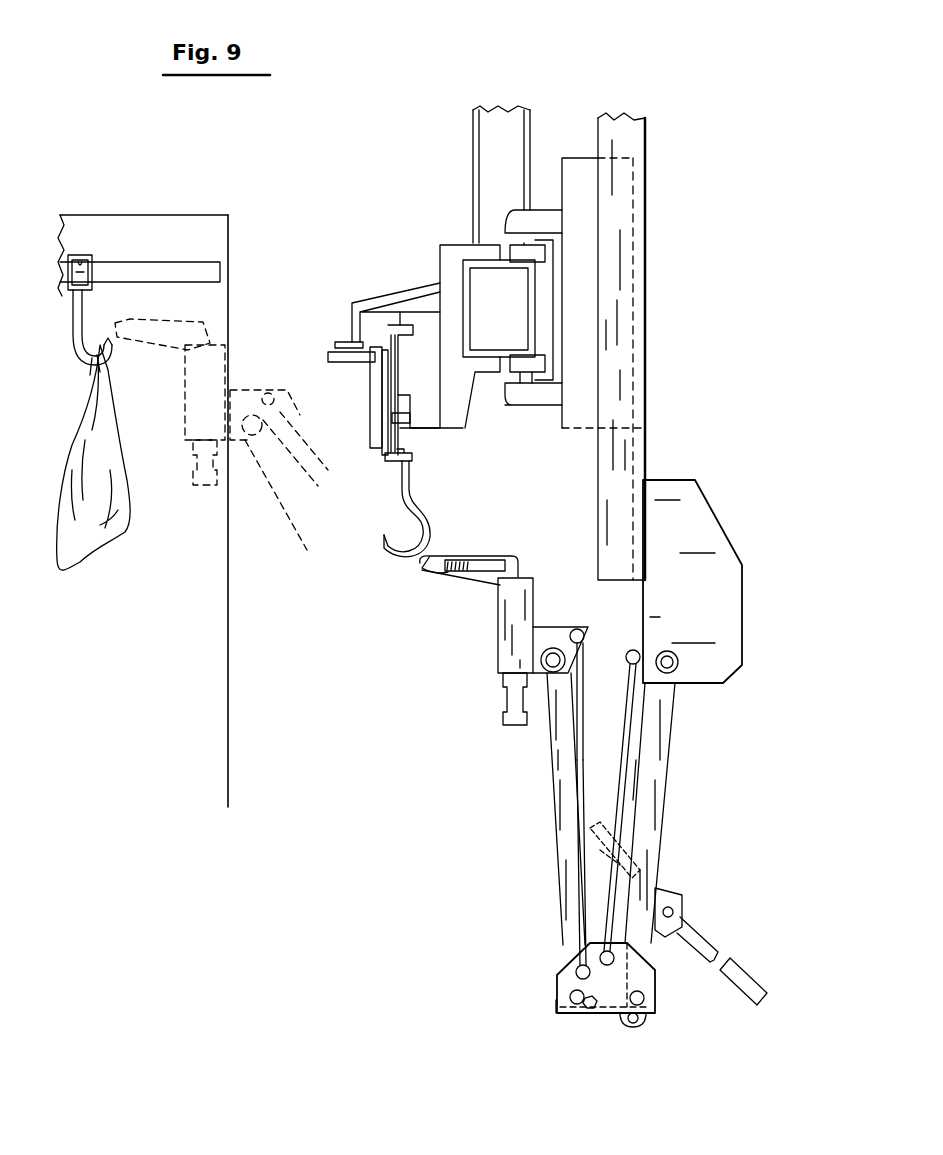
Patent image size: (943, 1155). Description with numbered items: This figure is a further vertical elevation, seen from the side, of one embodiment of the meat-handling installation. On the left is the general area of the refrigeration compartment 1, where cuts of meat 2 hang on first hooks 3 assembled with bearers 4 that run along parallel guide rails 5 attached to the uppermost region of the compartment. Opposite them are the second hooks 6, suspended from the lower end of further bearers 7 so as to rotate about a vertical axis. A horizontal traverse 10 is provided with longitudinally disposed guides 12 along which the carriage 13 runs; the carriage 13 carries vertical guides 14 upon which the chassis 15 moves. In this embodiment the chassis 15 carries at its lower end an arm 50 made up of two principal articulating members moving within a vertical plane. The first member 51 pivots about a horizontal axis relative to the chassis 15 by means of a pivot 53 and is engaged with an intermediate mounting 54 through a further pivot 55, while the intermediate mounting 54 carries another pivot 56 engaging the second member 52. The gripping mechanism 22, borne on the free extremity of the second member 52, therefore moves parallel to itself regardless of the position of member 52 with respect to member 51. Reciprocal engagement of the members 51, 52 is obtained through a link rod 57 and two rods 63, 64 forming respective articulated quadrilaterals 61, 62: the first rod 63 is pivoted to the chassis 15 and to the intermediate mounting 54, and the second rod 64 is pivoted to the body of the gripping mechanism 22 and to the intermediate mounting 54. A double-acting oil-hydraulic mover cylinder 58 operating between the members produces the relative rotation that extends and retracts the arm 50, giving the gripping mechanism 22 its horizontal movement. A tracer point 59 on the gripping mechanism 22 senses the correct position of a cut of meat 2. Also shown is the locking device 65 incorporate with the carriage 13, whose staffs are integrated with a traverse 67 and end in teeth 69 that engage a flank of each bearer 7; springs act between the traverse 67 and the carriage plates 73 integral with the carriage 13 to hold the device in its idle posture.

The refrigeration compartment 1 is at (243, 218).
The cuts of meat 2 is at (128, 515).
The first hooks 3 is at (75, 330).
The bearers 4 is at (58, 295).
The guide rails 5 is at (130, 272).
The second hooks 6 is at (425, 528).
The bearers 7 is at (380, 370).
The horizontal traverse 10 is at (452, 247).
The longitudinal guides 12 is at (503, 392).
The carriage 13 is at (549, 198).
The vertical guides 14 is at (633, 247).
The chassis 15 is at (680, 468).
The gripping mechanism 22 is at (475, 592).
The arm 50 is at (542, 1022).
The first member 51 is at (655, 845).
The second member 52 is at (560, 822).
The pivot 53 is at (680, 672).
The intermediate mounting 54 is at (586, 972).
The pivot 55 is at (644, 998).
The pivot 56 is at (572, 997).
The link rod 57 is at (607, 1012).
The double-acting oil-hydraulic mover cylinder 58 is at (735, 920).
The tracer point 59 is at (485, 550).
The articulated quadrilateral 61 is at (613, 752).
The articulated quadrilateral 62 is at (576, 770).
The first rod 63 is at (625, 775).
The second rod 64 is at (580, 680).
The locking device 65 is at (368, 462).
The traverse 67 is at (375, 372).
The teeth 69 is at (392, 462).
The carriage plates 73 is at (330, 352).